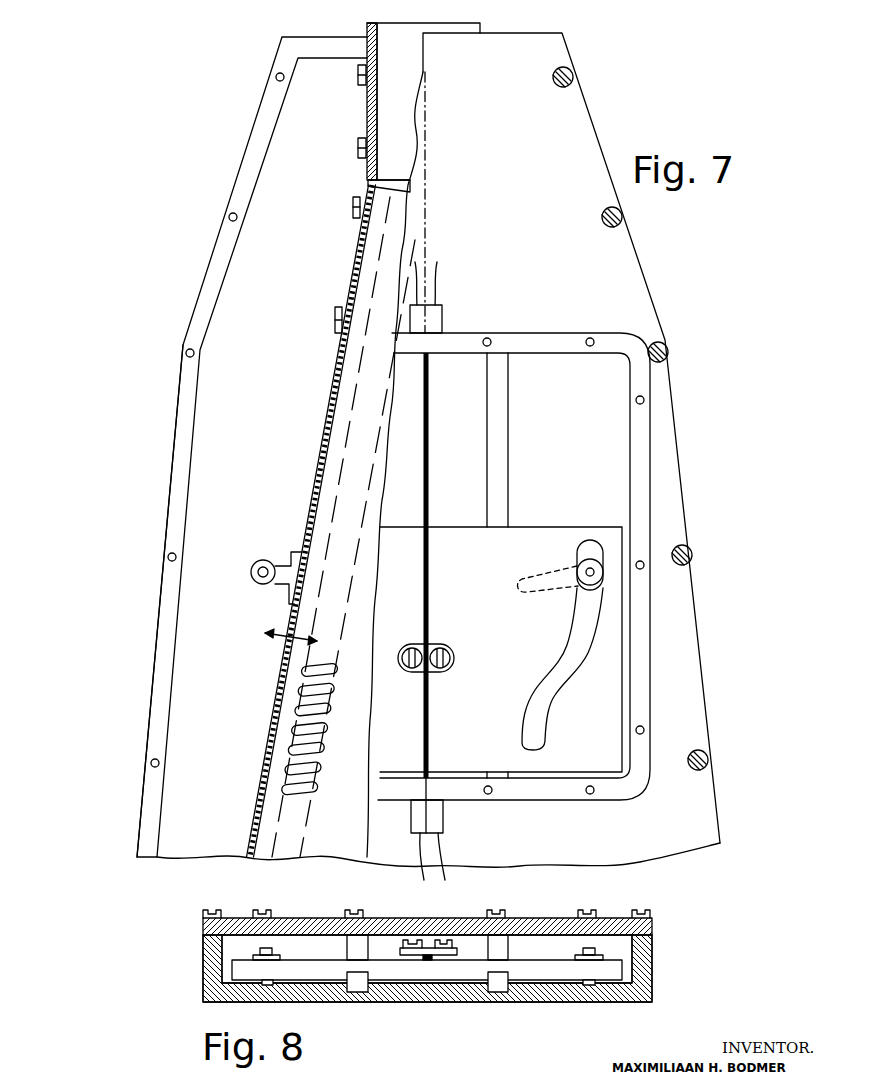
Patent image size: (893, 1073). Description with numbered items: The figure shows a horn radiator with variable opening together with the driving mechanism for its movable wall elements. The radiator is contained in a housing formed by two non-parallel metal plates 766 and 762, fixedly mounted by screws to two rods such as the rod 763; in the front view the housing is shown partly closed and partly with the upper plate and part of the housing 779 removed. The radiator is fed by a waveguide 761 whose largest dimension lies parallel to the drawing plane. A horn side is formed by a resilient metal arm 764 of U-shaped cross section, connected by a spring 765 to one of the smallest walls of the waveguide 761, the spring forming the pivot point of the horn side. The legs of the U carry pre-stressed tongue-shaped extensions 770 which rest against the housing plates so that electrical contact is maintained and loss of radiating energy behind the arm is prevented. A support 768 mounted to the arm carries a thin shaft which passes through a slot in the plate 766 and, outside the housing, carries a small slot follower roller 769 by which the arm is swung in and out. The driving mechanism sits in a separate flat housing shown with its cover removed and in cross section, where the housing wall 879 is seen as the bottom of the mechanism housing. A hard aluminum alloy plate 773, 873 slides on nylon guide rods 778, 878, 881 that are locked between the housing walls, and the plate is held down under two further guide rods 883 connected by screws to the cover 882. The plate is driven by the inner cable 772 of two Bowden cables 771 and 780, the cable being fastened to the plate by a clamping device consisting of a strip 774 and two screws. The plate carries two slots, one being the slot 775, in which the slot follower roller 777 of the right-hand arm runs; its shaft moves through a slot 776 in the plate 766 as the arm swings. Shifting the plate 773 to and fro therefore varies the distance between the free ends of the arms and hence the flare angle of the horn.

In FIG. 7, the waveguide 761 is at (423, 101).
In FIG. 7, the metal plate 762 is at (428, 452).
In FIG. 7, the rod 763 is at (185, 514).
In FIG. 7, the metal arm 764 is at (322, 456).
In FIG. 7, the spring 765 is at (363, 184).
In FIG. 7, the metal plate 766 is at (543, 445).
In FIG. 7, the support 768 is at (105, 527).
In FIG. 7, the slot follower roller 769 is at (262, 560).
In FIG. 7, the tongue-shaped extension 770 is at (294, 757).
In FIG. 7, the Bowden cable 771 is at (435, 278).
In FIG. 7, the inner cable 772 is at (428, 459).
In FIG. 7, the plate 773 is at (501, 649).
In FIG. 7, the strip 774 is at (444, 658).
In FIG. 7, the slot 775 is at (565, 643).
In FIG. 7, the slot 776 is at (521, 579).
In FIG. 7, the slot follower roller 777 is at (590, 545).
In FIG. 7, the nylon guide rod 778 is at (509, 459).
In FIG. 7, the housing 779 is at (626, 453).
In FIG. 7, the Bowden cable 780 is at (430, 852).
In FIG. 8, the plate 873 is at (427, 962).
In FIG. 8, the nylon guide rod 878 is at (500, 985).
In FIG. 8, the housing 879 is at (572, 1000).
In FIG. 8, the nylon guide rod 881 is at (358, 985).
In FIG. 8, the cover 882 is at (535, 922).
In FIG. 8, the guide rod 883 is at (495, 950).